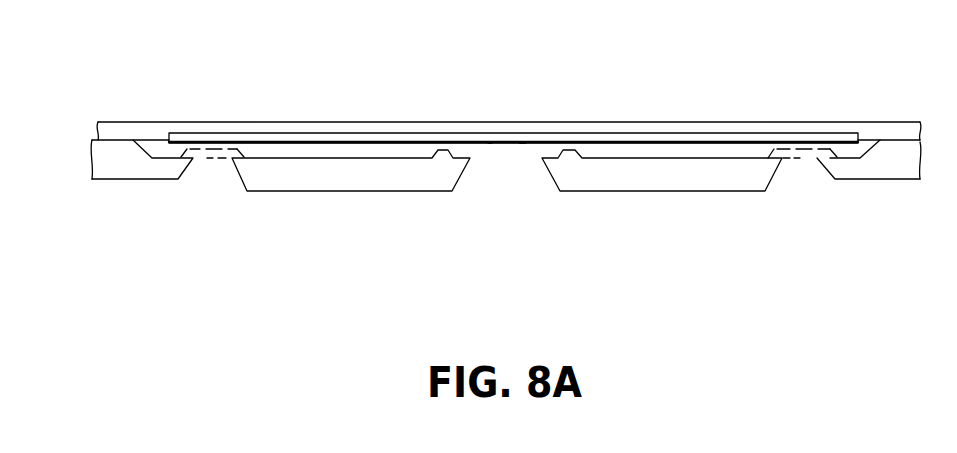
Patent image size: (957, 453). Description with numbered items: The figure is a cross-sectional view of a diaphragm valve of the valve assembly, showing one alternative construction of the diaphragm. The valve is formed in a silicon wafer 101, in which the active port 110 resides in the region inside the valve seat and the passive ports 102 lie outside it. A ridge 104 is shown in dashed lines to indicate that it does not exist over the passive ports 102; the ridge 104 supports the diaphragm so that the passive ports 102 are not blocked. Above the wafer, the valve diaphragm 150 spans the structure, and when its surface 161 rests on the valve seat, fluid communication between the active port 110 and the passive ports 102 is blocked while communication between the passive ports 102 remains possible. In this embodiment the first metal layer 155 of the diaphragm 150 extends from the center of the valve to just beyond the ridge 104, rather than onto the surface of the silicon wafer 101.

The silicon wafer 101 is at (92, 160).
The passive ports 102 is at (225, 198).
The ridge 104 is at (804, 159).
The active port 110 is at (531, 165).
The valve diaphragm 150 is at (98, 127).
The first metal layer 155 is at (523, 124).
The surface of valve diaphragm 161 is at (490, 143).